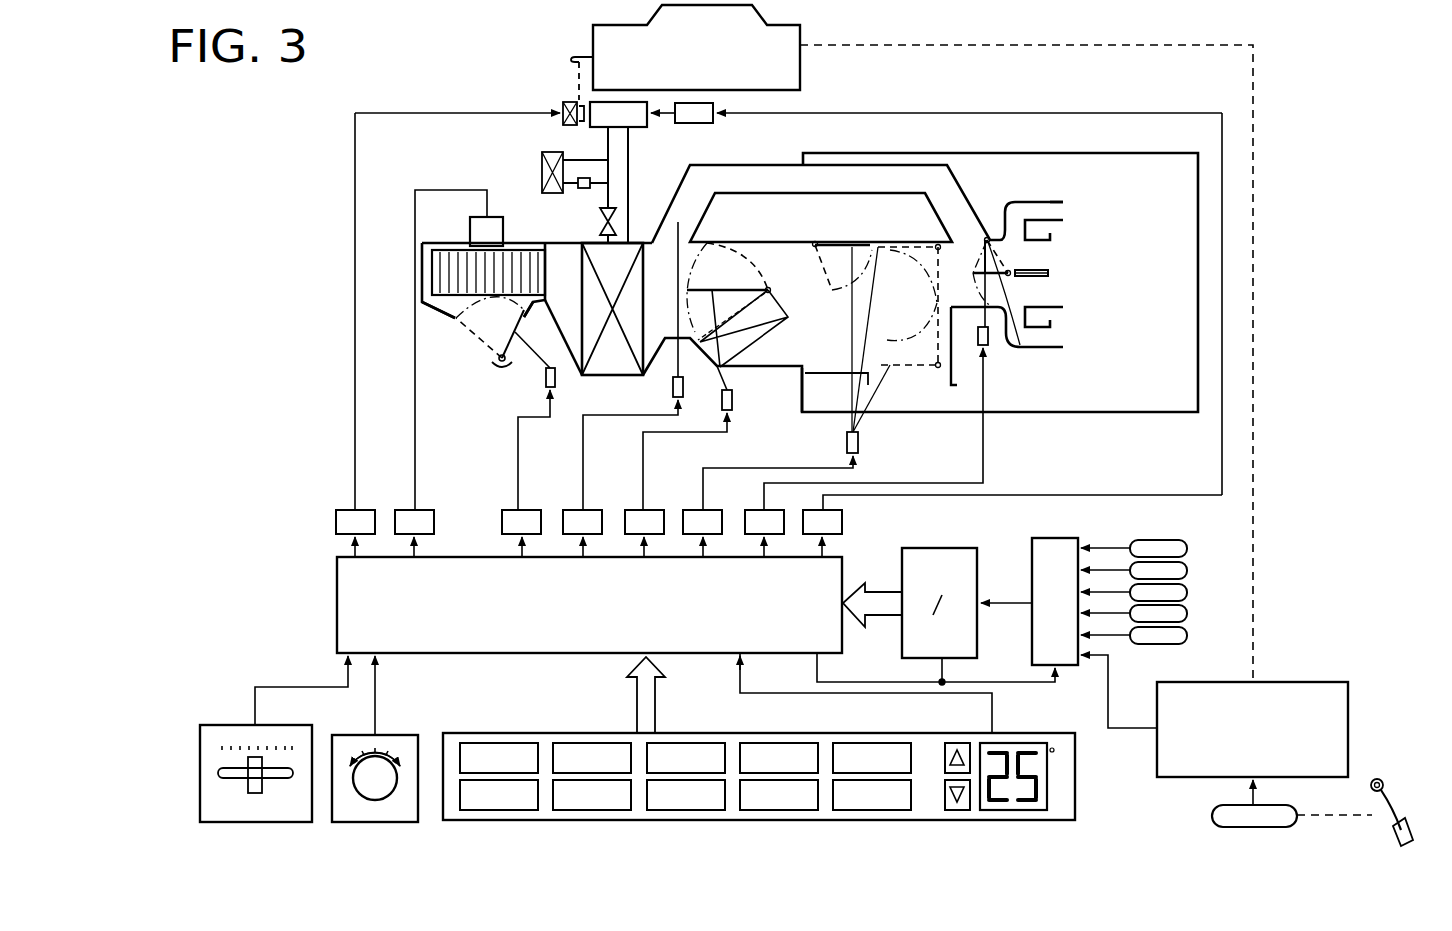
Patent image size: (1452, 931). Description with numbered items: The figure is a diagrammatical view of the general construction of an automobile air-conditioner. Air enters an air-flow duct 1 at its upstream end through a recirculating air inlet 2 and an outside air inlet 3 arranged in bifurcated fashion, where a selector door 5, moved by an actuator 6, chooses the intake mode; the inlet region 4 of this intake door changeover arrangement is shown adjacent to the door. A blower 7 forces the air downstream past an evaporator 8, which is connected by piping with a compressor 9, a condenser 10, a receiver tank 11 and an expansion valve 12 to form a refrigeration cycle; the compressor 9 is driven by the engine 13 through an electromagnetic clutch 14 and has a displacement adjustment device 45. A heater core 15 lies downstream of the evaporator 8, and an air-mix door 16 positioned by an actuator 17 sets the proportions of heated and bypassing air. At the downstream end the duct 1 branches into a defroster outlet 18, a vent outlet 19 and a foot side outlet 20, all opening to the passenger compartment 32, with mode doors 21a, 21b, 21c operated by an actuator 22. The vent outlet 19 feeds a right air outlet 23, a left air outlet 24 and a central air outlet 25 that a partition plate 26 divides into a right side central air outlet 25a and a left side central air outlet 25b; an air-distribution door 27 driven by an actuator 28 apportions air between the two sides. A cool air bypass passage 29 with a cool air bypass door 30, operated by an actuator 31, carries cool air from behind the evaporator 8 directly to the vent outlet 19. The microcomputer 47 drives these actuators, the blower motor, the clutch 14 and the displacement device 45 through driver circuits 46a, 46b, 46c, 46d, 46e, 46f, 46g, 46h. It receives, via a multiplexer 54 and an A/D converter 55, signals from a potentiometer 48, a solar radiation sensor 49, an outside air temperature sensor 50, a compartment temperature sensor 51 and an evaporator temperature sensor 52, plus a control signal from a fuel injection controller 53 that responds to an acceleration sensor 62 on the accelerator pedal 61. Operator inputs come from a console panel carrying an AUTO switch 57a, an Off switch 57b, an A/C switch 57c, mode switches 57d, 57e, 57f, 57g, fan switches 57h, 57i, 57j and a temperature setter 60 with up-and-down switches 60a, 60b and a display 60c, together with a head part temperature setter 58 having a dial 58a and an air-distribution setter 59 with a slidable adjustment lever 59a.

The air-flow duct 1 is at (656, 240).
The recirculating air inlet 2 is at (478, 350).
The outside air inlet 3 is at (457, 322).
The inside air inlet 4 is at (527, 317).
The selector door 5 is at (510, 345).
The actuator 6 is at (542, 421).
The blower 7 is at (480, 350).
The evaporator 8 is at (614, 377).
The compressor 9 is at (622, 172).
The condenser 10 is at (541, 160).
The receiver tank 11 is at (580, 190).
The expansion valve 12 is at (600, 222).
The engine 13 is at (795, 86).
The electromagnetic clutch 14 is at (564, 100).
The heater core 15 is at (750, 342).
The air-mix door 16 is at (735, 287).
The actuator 17 is at (707, 438).
The defroster outlet 18 is at (871, 241).
The vent outlet 19 is at (987, 236).
The foot side outlet 20 is at (953, 388).
The mode door 21a is at (836, 222).
The mode door 21b is at (897, 339).
The mode door 21c is at (895, 367).
The actuator 22 is at (859, 443).
The right air outlet 23 is at (1064, 207).
The left air outlet 24 is at (1053, 334).
The central air outlet 25 is at (1071, 284).
The right side central air outlet 25a is at (1036, 250).
The left side central air outlet 25b is at (1040, 296).
The partition plate 26 is at (1050, 272).
The air-distribution door 27 is at (990, 340).
The actuator 28 is at (990, 365).
The cool air bypass passage 29 is at (683, 196).
The cool air bypass door 30 is at (703, 241).
The actuator 31 is at (672, 390).
The passenger compartment 32 is at (1133, 414).
The displacement adjustment device 45 is at (710, 122).
The driver circuit 46a is at (503, 515).
The driver circuit 46b is at (650, 508).
The driver circuit 46c is at (726, 505).
The driver circuit 46d is at (788, 506).
The driver circuit 46e is at (590, 508).
The driver circuit 46f is at (420, 508).
The driver circuit 46g is at (343, 508).
The driver circuit 46h is at (843, 522).
The microcomputer 47 is at (337, 606).
The potentiometer 48 is at (1188, 548).
The solar radiation sensor 49 is at (1188, 570).
The outside air temperature sensor 50 is at (1188, 592).
The compartment temperature sensor 51 is at (1188, 613).
The evaporator temperature sensor 52 is at (1188, 635).
The fuel injection controller 53 is at (1336, 682).
The multiplexer 54 is at (1058, 538).
The A/D converter 55 is at (944, 552).
The AUTO switch 57a is at (492, 743).
The Off switch 57b is at (504, 812).
The A/C switch 57c is at (595, 743).
The mode switch 57d is at (688, 743).
The mode switch 57e is at (780, 743).
The mode switch 57f is at (870, 743).
The mode switch 57g is at (596, 812).
The fan switch 57h is at (690, 812).
The fan switch 57i is at (783, 812).
The fan switch 57j is at (876, 812).
The head part temperature setter 58 is at (358, 742).
The dial 58a is at (389, 766).
The air-distribution setter 59 is at (200, 786).
The slidable adjustment lever 59a is at (249, 768).
The temperature setter 60 is at (1080, 792).
The up-and-down switch 60a is at (958, 743).
The up-and-down switch 60b is at (957, 812).
The display 60c is at (1020, 812).
The accelerator pedal 61 is at (1401, 802).
The acceleration sensor 62 is at (1213, 816).